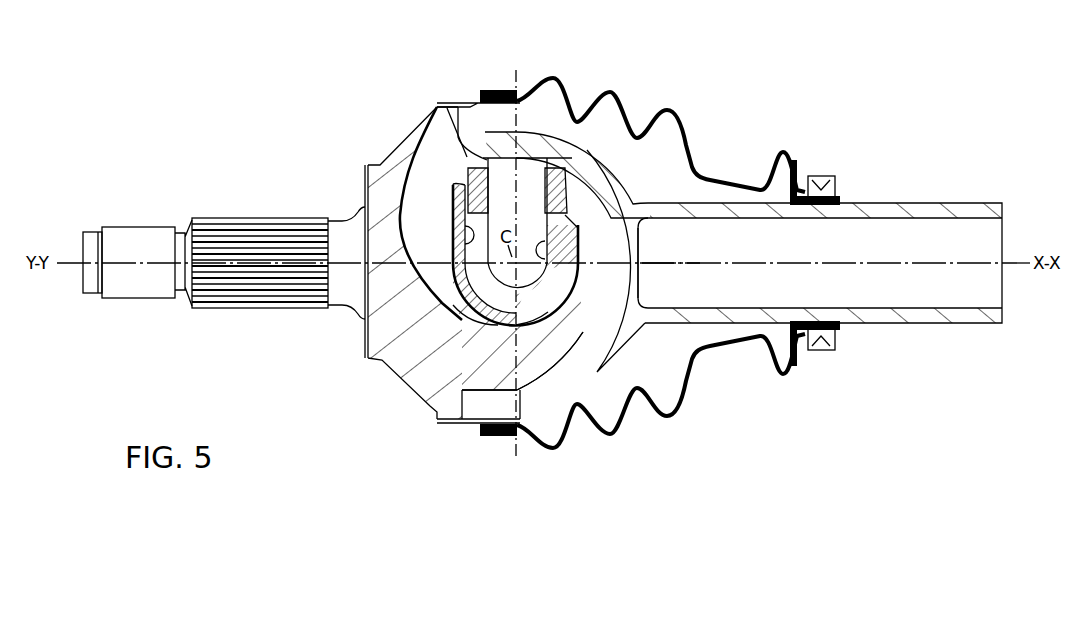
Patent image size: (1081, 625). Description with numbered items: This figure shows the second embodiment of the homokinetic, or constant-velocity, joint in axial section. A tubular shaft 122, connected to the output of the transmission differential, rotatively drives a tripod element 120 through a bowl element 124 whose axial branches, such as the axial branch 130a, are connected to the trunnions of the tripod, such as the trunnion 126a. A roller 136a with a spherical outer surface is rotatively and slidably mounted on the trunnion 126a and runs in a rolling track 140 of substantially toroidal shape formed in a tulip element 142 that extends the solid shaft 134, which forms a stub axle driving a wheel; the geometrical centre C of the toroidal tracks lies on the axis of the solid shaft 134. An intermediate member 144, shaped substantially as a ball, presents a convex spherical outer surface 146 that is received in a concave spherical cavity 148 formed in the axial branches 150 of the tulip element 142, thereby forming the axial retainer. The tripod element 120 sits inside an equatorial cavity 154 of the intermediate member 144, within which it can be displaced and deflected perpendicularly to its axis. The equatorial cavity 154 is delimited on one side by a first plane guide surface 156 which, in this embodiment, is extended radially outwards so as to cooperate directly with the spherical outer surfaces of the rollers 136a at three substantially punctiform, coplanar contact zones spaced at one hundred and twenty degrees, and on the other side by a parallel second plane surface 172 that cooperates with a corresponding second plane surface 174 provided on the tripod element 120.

The tripod element 120 is at (557, 294).
The tubular shaft 122 is at (953, 206).
The bowl element 124 is at (587, 155).
The trunnion 126a is at (505, 175).
The axial branch 130a is at (538, 138).
The solid shaft 134 is at (243, 217).
The roller 136a is at (460, 152).
The rolling track 140 is at (572, 212).
The tulip element 142 is at (385, 323).
The intermediate member 144 is at (533, 323).
The convex spherical outer surface 146 is at (575, 280).
The concave spherical cavity 148 is at (472, 322).
The axial branches 150 is at (523, 357).
The equatorial cavity 154 is at (517, 388).
The first plane guide surface 156 is at (458, 234).
The second plane surface 172 is at (576, 243).
The second plane surface of the tripod 174 is at (636, 265).